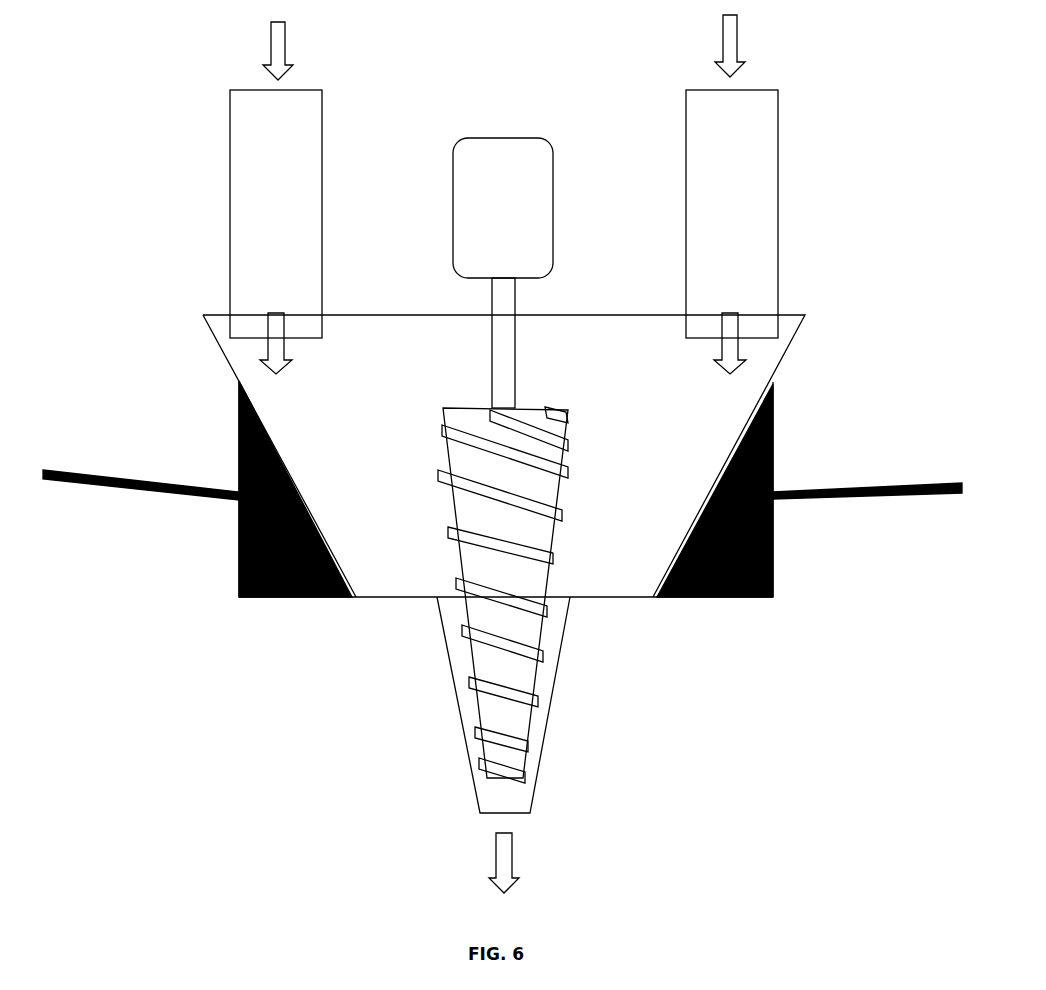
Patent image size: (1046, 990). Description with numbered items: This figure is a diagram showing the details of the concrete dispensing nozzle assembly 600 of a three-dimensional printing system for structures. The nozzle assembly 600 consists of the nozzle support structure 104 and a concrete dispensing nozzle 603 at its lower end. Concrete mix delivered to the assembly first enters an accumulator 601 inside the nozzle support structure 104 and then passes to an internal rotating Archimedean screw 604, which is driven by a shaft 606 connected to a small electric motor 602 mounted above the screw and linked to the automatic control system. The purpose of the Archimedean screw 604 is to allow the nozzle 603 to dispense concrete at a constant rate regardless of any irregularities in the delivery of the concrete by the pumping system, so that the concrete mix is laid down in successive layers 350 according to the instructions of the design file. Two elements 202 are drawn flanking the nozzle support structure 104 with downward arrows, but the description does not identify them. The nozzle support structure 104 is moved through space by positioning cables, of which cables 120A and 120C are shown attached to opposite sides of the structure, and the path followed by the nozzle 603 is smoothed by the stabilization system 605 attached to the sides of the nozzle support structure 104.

The nozzle assembly 600 is at (177, 92).
The nozzle support structure 104 is at (183, 238).
The pistons 202 is at (675, 102).
The small electric motor 602 is at (523, 205).
The shaft 606 is at (488, 358).
The accumulator 601 is at (648, 460).
The Archimedean screw 604 is at (520, 747).
The concrete dispensing nozzle 603 is at (475, 793).
The successive layers 350 is at (472, 865).
The stabilization system 605 is at (222, 562).
The positioning cable 120A is at (131, 465).
The positioning cable 120C is at (893, 478).